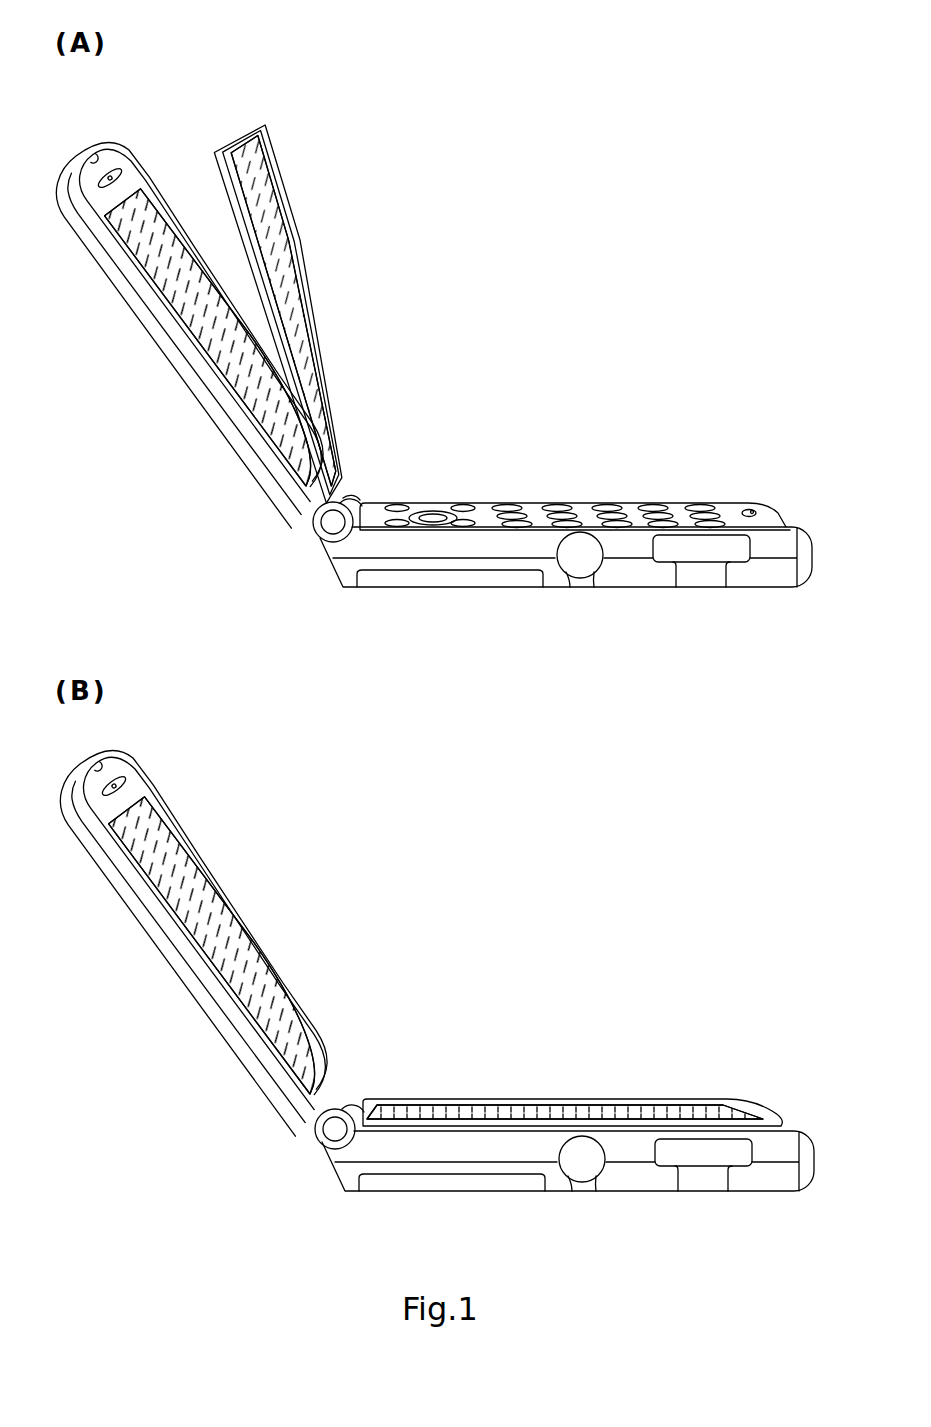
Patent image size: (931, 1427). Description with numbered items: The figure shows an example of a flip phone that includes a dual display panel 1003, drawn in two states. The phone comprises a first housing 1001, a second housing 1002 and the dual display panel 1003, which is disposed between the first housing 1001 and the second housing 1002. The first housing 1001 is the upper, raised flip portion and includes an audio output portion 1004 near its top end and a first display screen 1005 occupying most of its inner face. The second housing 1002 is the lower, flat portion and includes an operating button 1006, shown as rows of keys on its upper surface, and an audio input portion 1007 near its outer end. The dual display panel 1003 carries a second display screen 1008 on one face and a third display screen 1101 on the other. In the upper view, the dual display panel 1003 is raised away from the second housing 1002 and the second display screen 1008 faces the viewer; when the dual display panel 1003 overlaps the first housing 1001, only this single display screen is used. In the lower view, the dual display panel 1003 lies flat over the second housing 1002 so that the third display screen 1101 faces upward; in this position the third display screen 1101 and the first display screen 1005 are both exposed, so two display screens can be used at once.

The first housing 1001 is at (202, 291).
The second housing 1002 is at (562, 532).
The dual display panel 1003 is at (496, 594).
The audio output portion 1004 is at (110, 178).
The first display screen 1005 is at (223, 337).
The operating button 1006 is at (650, 506).
The audio input portion 1007 is at (748, 508).
The second display screen 1008 is at (228, 140).
The third display screen 1101 is at (567, 1110).